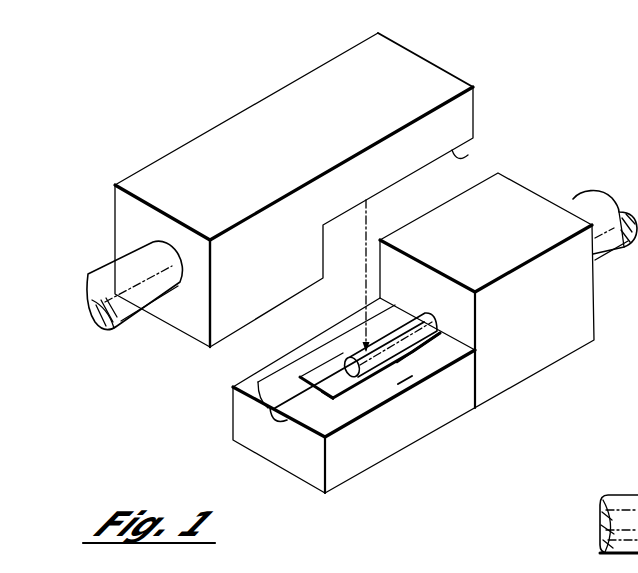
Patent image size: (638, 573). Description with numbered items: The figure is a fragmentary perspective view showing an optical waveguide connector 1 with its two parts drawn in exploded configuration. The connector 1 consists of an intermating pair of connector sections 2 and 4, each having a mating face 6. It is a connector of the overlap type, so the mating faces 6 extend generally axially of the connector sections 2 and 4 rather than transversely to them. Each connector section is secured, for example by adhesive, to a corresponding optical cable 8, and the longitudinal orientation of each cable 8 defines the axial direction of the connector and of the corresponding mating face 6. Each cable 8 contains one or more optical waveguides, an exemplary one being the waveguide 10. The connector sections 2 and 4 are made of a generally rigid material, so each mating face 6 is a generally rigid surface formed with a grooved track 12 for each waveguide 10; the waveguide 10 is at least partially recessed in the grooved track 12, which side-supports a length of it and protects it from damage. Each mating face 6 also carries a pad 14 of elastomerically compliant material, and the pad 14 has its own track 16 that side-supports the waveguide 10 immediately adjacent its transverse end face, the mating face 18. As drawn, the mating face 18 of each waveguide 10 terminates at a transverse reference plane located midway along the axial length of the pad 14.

The optical waveguide connector 1 is at (536, 114).
The connector section 2 is at (246, 117).
The connector section 4 is at (553, 343).
The mating face 6 is at (470, 156).
The optical cable 8 is at (108, 268).
The optical waveguide 10 is at (432, 342).
The grooved track 12 is at (280, 425).
The pad 14 is at (360, 397).
The track 16 is at (320, 392).
The mating face 18 is at (399, 386).